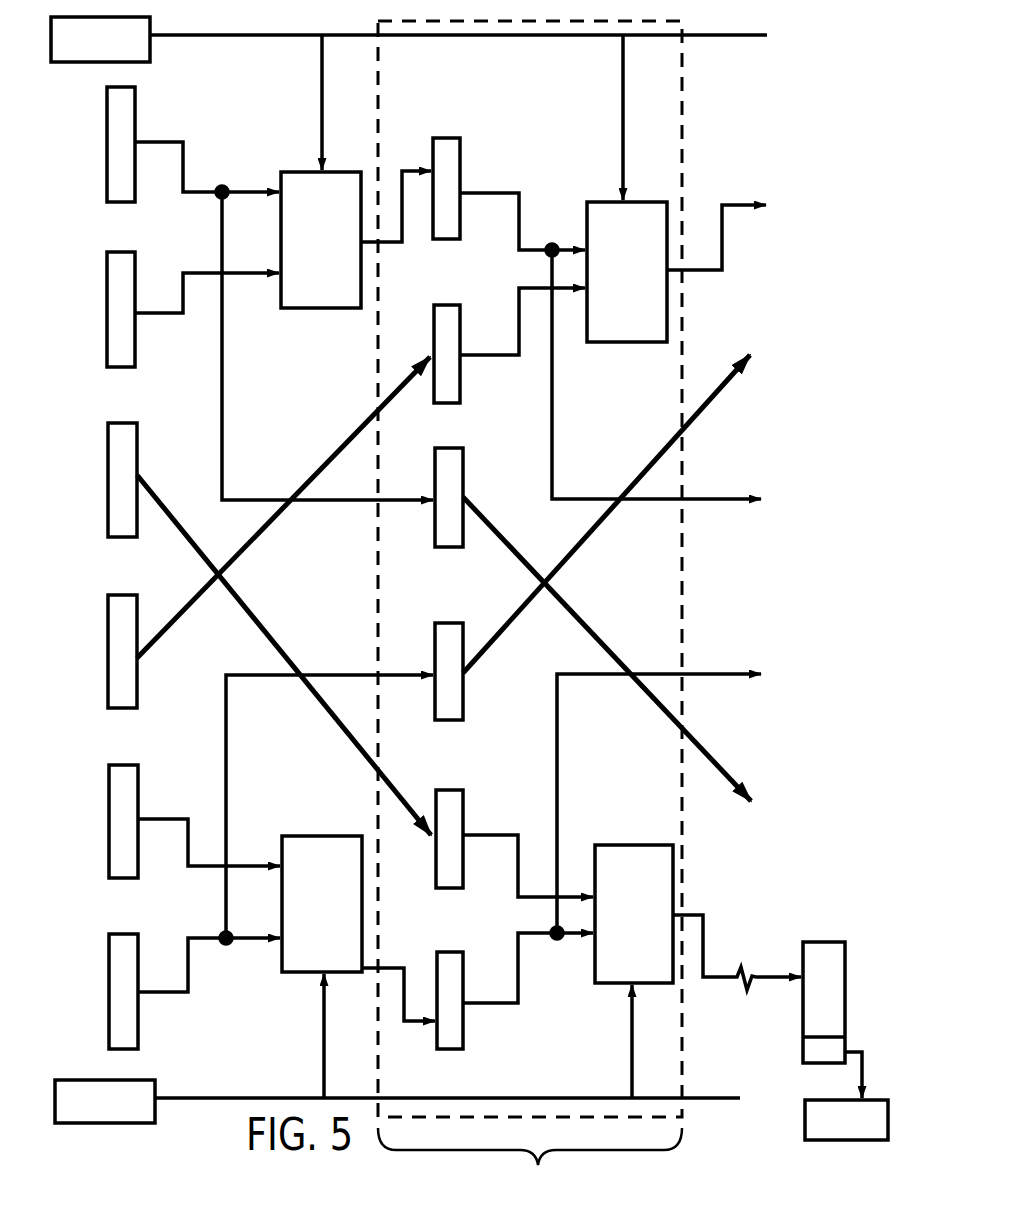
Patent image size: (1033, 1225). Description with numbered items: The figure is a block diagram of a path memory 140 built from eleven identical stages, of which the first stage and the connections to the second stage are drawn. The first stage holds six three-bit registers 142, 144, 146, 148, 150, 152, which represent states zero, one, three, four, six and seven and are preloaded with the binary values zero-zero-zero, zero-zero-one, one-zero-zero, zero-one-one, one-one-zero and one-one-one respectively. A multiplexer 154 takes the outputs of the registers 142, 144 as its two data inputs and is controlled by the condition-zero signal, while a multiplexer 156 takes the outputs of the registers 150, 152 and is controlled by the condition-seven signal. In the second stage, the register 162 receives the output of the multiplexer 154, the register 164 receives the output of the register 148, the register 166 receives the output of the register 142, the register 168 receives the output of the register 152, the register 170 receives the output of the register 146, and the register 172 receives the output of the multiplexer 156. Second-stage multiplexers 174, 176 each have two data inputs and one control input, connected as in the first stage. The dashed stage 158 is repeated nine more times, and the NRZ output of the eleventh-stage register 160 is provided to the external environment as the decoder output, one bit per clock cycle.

The path memory 140 is at (158, 1129).
The register 142 is at (103, 140).
The register 144 is at (103, 305).
The register 146 is at (107, 465).
The register 148 is at (107, 648).
The register 150 is at (106, 816).
The register 152 is at (106, 987).
The multiplexer 154 is at (313, 308).
The multiplexer 156 is at (308, 974).
The stage 158 is at (683, 610).
The eleventh-stage register 160 is at (825, 942).
The second stage register 162 is at (460, 163).
The second stage register 164 is at (460, 325).
The second stage register 166 is at (463, 472).
The second stage register 168 is at (463, 647).
The second stage register 170 is at (463, 805).
The second stage register 172 is at (463, 967).
The second stage multiplexer 174 is at (612, 343).
The second stage multiplexer 176 is at (612, 983).